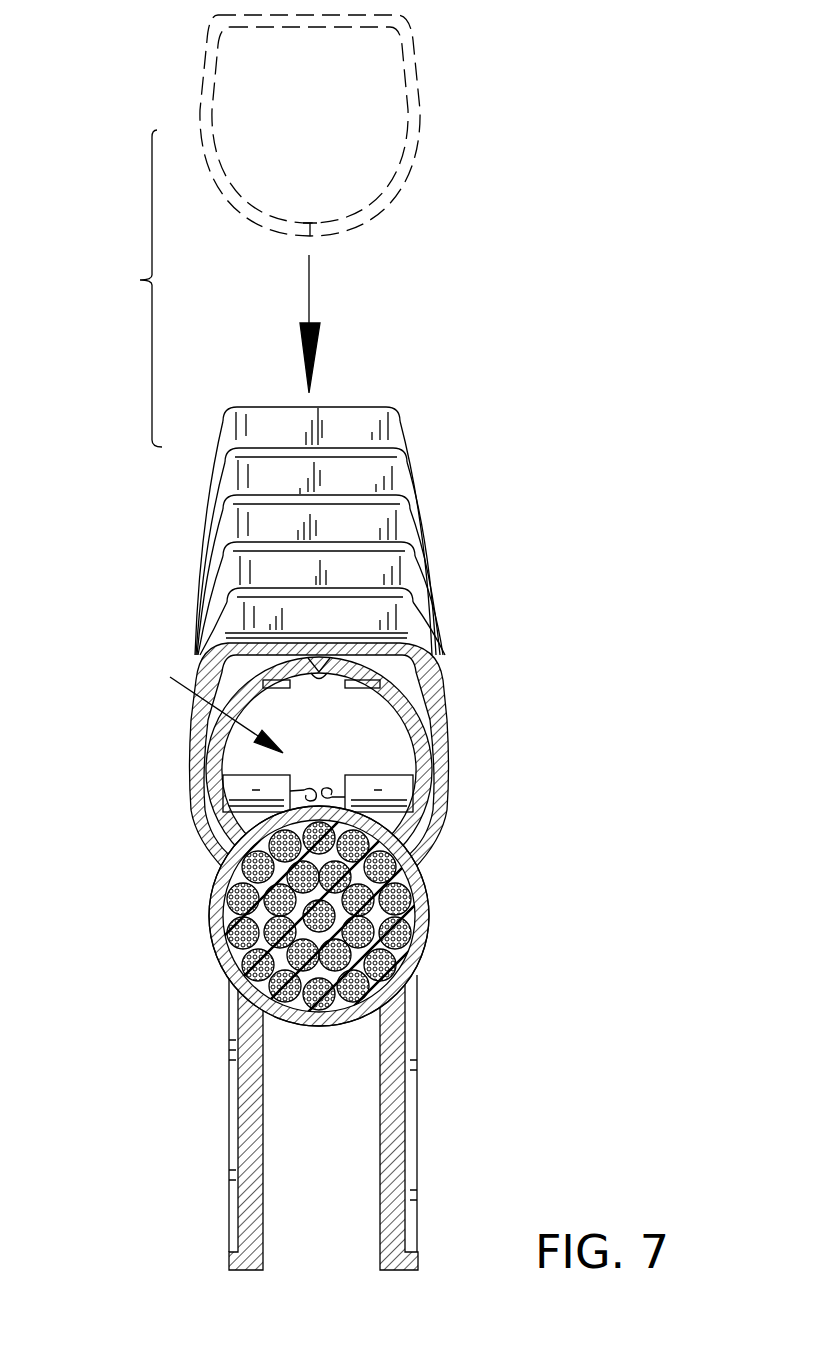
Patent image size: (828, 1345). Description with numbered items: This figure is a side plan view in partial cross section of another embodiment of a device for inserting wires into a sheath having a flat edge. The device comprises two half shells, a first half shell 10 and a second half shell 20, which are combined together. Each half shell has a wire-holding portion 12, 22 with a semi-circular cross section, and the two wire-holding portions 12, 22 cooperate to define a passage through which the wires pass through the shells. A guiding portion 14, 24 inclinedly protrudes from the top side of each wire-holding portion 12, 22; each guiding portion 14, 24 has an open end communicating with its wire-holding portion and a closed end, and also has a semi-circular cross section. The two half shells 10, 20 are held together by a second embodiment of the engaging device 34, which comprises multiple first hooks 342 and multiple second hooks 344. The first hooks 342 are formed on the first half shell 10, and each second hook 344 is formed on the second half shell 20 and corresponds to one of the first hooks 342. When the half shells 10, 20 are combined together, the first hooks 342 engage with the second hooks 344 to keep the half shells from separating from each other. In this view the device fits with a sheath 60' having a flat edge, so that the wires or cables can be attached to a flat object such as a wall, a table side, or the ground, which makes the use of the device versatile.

The first half shell 10 is at (319, 915).
The wire-holding portion 12 is at (428, 928).
The guiding portion 14 is at (353, 777).
The second half shell 20 is at (172, 893).
The wire-holding portion 22 is at (217, 930).
The guiding portion 24 is at (213, 793).
The engaging device 34 is at (207, 704).
The first hooks 342 is at (325, 793).
The second hooks 344 is at (297, 778).
The sheath 60' is at (369, 531).